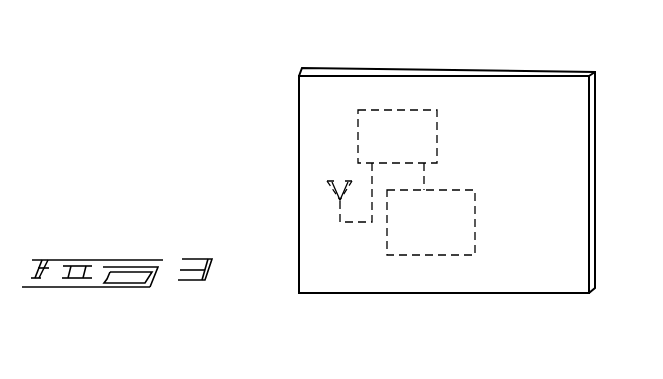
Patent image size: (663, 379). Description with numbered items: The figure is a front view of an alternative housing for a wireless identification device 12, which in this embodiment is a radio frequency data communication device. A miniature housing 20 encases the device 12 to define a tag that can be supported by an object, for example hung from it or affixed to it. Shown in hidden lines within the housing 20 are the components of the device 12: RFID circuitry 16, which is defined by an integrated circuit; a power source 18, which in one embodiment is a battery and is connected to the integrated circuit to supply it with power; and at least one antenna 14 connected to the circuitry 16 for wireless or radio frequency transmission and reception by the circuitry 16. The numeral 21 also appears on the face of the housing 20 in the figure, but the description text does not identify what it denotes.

The wireless identification device 12 is at (475, 106).
The antenna 14 is at (328, 178).
The RFID circuitry 16 is at (396, 110).
The power source 18 is at (428, 255).
The miniature housing 20 is at (298, 192).
The card indicia / label 21 is at (545, 272).